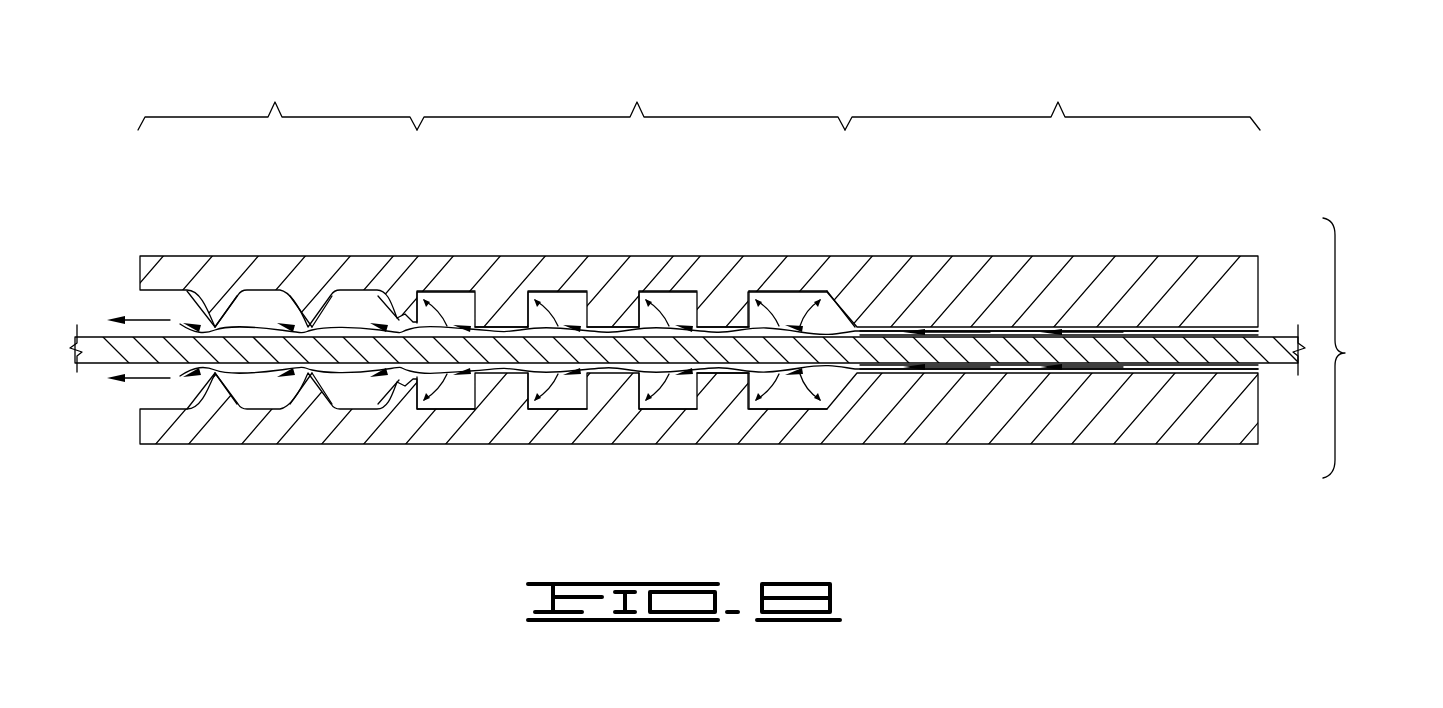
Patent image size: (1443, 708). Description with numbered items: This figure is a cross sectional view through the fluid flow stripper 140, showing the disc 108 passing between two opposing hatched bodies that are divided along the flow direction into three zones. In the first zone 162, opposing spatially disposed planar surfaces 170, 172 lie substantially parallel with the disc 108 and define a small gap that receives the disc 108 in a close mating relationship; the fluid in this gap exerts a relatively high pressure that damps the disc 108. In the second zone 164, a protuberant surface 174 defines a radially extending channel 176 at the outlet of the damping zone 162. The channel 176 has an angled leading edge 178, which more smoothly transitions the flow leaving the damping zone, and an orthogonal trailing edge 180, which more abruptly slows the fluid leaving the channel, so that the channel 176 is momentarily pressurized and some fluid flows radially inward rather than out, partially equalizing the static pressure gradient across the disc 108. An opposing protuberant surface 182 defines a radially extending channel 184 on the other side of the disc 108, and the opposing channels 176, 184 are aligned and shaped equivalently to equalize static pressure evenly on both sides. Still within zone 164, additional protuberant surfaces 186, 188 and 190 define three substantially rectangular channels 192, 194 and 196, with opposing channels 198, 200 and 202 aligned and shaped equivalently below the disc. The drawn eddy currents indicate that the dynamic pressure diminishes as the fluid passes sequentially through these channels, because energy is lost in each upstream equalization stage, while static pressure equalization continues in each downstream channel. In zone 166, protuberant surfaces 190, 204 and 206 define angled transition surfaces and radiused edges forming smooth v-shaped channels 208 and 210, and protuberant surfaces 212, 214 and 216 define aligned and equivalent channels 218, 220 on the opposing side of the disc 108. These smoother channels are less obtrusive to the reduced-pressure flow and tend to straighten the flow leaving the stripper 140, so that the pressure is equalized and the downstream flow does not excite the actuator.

The disc 108 is at (1265, 345).
The stripper 140 is at (1345, 353).
The first zone 162 is at (1058, 102).
The second zone 164 is at (637, 102).
The zone 166 is at (275, 102).
The planar surface 170 is at (1007, 330).
The planar surface 172 is at (1143, 362).
The protuberant surface 174 is at (721, 325).
The radially extending channel 176 is at (784, 283).
The angled leading edge 178 is at (848, 307).
The orthogonal trailing edge 180 is at (742, 305).
The opposing protuberant surface 182 is at (722, 378).
The radially extending channel 184 is at (792, 417).
The protuberant surface 186 is at (610, 325).
The protuberant surface 188 is at (503, 325).
The protuberant surface 190 is at (398, 318).
The rectangular channel 192 is at (667, 283).
The rectangular channel 194 is at (555, 283).
The rectangular channel 196 is at (443, 283).
The opposing channel 198 is at (673, 414).
The opposing channel 200 is at (571, 412).
The opposing channel 202 is at (458, 412).
The protuberant surface 204 is at (308, 322).
The protuberant surface 206 is at (213, 322).
The channel 208 is at (355, 283).
The channel 210 is at (262, 283).
The protuberant surface 212 is at (398, 383).
The protuberant surface 214 is at (308, 378).
The protuberant surface 216 is at (213, 378).
The channel 218 is at (362, 418).
The channel 220 is at (263, 418).